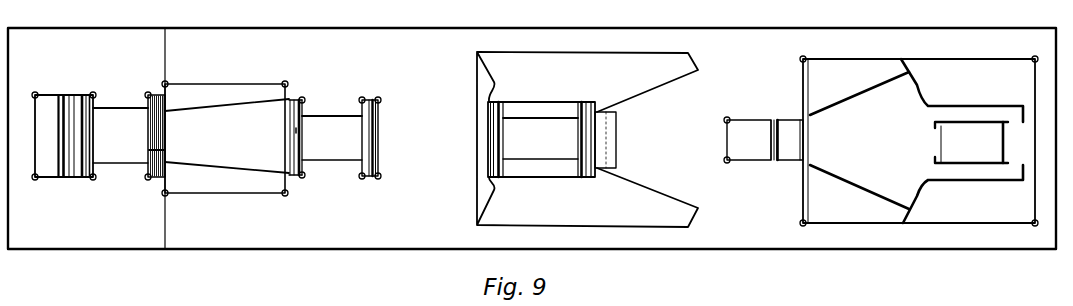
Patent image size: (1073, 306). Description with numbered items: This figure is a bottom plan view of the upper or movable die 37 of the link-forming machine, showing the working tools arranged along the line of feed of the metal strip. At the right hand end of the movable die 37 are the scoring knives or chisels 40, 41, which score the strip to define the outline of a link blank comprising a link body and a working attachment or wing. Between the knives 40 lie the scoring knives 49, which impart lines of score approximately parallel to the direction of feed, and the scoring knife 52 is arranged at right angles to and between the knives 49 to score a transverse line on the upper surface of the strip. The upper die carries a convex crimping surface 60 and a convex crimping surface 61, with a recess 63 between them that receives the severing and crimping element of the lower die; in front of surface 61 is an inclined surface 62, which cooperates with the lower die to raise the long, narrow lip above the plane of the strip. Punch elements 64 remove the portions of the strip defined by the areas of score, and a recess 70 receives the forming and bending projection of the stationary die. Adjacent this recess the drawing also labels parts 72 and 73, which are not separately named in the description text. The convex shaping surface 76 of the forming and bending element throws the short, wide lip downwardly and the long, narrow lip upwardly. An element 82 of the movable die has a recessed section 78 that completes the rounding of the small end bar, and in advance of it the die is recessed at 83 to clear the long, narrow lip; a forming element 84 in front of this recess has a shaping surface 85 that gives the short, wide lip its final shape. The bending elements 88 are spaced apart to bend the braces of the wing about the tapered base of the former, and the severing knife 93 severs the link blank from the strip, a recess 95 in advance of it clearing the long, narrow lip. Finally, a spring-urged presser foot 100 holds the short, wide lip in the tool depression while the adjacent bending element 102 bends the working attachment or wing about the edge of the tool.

The movable die 37 is at (399, 240).
The scoring knife 40 is at (987, 104).
The scoring knife 41 is at (853, 86).
The scoring knife 49 is at (941, 128).
The scoring knife 52 is at (1003, 145).
The convex crimping surface 60 is at (810, 151).
The convex crimping surface 61 is at (773, 134).
The inclined surface 62 is at (752, 148).
The recess 63 is at (787, 133).
The punch element 64 is at (585, 57).
The recess 70 is at (543, 132).
The rod 72 is at (606, 163).
The sleeve 73 is at (598, 150).
The convex shaping surface 76 is at (489, 153).
The recessed section 78 is at (378, 150).
The element of the movable die 82 is at (368, 178).
The recess 83 is at (329, 152).
The forming element 84 is at (297, 99).
The shaping surface 85 is at (296, 130).
The bending element 88 is at (230, 71).
The severing knife 93 is at (156, 180).
The recess 95 is at (120, 135).
The presser foot 100 is at (80, 100).
The bending element 102 is at (45, 102).